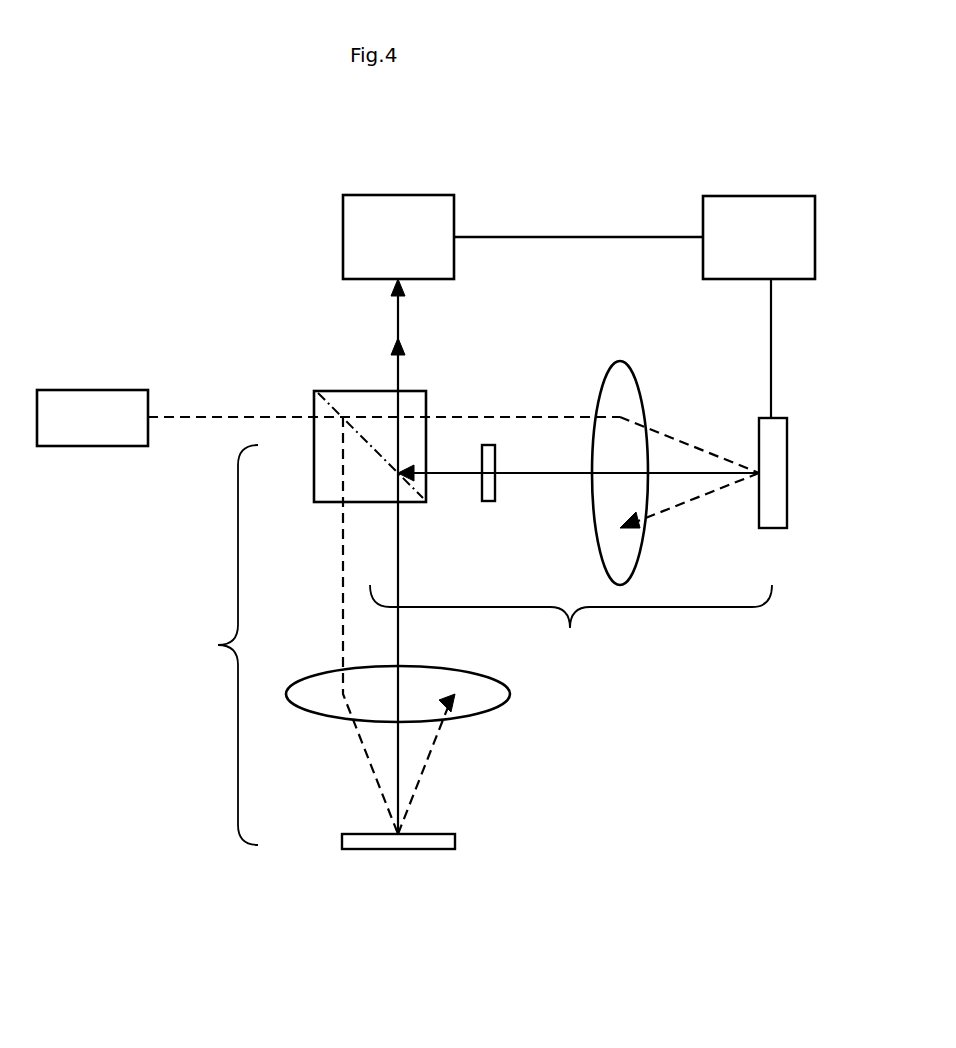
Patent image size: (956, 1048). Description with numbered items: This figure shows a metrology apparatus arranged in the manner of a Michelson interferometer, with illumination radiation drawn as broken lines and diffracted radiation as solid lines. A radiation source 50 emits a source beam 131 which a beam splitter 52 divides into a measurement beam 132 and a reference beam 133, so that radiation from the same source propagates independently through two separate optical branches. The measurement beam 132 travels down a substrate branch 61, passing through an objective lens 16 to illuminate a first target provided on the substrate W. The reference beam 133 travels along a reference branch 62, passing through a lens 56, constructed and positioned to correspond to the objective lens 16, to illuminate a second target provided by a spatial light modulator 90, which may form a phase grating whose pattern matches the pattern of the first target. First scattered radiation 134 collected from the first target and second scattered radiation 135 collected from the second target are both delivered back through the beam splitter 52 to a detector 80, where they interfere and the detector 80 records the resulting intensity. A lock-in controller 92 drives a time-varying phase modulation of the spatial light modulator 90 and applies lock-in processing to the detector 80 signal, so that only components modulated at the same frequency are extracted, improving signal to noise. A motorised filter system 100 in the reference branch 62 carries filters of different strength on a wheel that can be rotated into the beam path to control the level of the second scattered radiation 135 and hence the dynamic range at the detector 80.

The detector 80 is at (411, 248).
The lock-in controller 92 is at (772, 248).
The radiation source 50 is at (106, 428).
The beam splitter 52 is at (360, 398).
The source beam 131 is at (236, 417).
The reference beam 133 is at (499, 417).
The lens 56 is at (622, 378).
The spatial light modulator 90 is at (773, 473).
The second scattered radiation 135 is at (545, 478).
The motorised filter system 100 is at (489, 501).
The first scattered radiation 134 is at (400, 636).
The measurement beam 132 is at (343, 568).
The objective lens 16 is at (493, 694).
The substrate W is at (398, 850).
The substrate branch 61 is at (214, 659).
The reference branch 62 is at (588, 654).